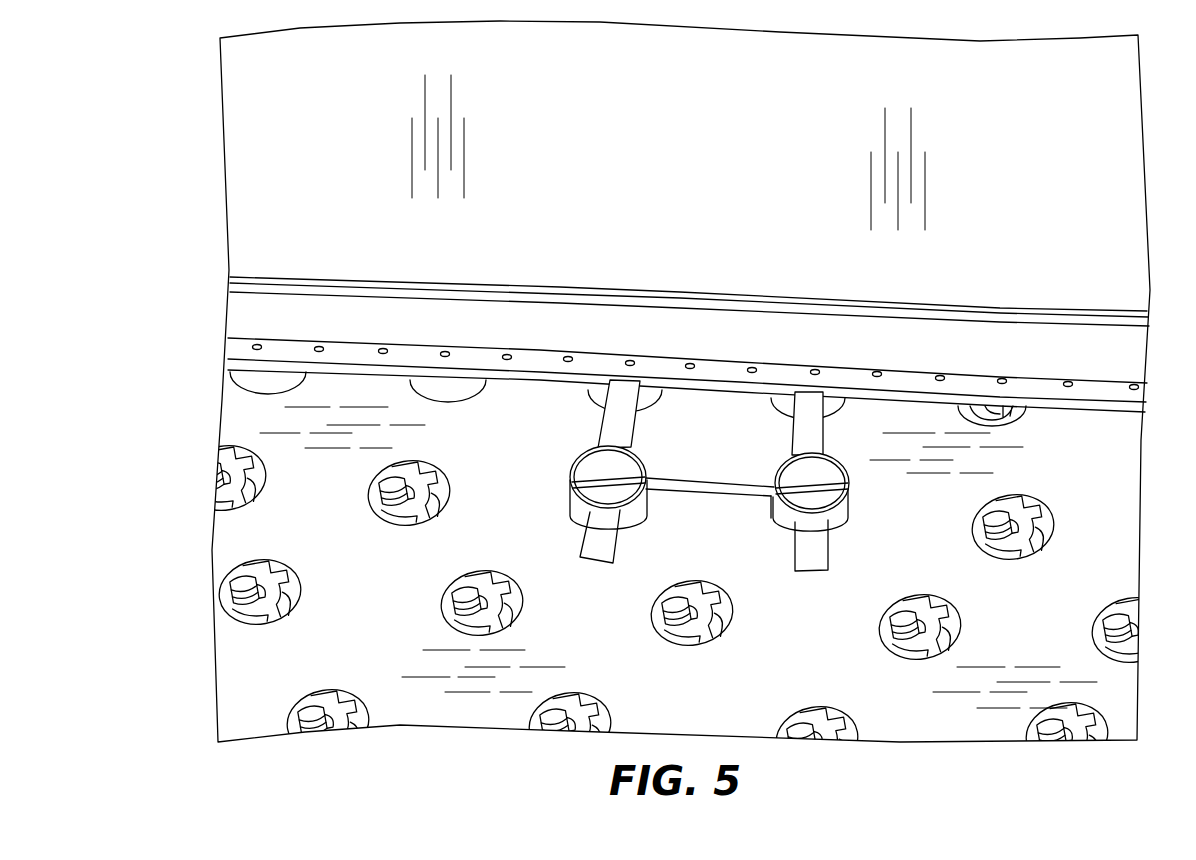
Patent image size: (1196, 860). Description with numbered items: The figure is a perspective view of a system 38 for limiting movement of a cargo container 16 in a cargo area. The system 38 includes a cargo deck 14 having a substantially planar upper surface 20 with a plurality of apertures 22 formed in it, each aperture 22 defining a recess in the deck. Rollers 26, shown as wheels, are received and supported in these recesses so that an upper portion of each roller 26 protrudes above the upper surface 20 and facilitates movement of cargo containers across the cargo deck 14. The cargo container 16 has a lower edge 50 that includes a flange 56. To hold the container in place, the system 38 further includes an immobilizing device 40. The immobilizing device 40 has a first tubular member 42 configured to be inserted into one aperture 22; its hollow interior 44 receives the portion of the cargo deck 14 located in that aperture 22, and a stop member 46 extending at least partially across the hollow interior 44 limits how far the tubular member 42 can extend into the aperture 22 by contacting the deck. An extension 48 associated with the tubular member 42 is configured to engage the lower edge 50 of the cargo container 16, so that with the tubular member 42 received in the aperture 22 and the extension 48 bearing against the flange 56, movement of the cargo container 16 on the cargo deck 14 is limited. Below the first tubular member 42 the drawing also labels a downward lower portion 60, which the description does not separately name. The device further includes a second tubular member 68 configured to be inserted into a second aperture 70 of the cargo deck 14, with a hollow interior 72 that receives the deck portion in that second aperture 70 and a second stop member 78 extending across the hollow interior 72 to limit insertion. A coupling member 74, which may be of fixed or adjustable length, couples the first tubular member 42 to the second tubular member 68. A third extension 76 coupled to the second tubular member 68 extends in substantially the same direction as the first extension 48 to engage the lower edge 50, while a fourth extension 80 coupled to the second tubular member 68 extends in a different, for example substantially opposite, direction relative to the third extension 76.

The cargo deck 14 is at (1075, 487).
The cargo container 16 is at (679, 149).
The upper surface 20 is at (476, 470).
The aperture 22 is at (245, 470).
The roller 26 is at (372, 488).
The system 38 is at (985, 256).
The immobilizing device 40 is at (714, 496).
The tubular member 42 is at (572, 503).
The hollow interior 44 is at (590, 460).
The stop member 46 is at (572, 470).
The extension 48 is at (607, 405).
The lower edge 50 is at (383, 360).
The flange 56 is at (543, 362).
The lower tab 60 is at (597, 550).
The second tubular member 68 is at (850, 513).
The second aperture 70 is at (770, 522).
The hollow interior 72 is at (825, 470).
The coupling member 74 is at (730, 480).
The third extension 76 is at (810, 415).
The second stop member 78 is at (848, 487).
The fourth extension 80 is at (815, 555).